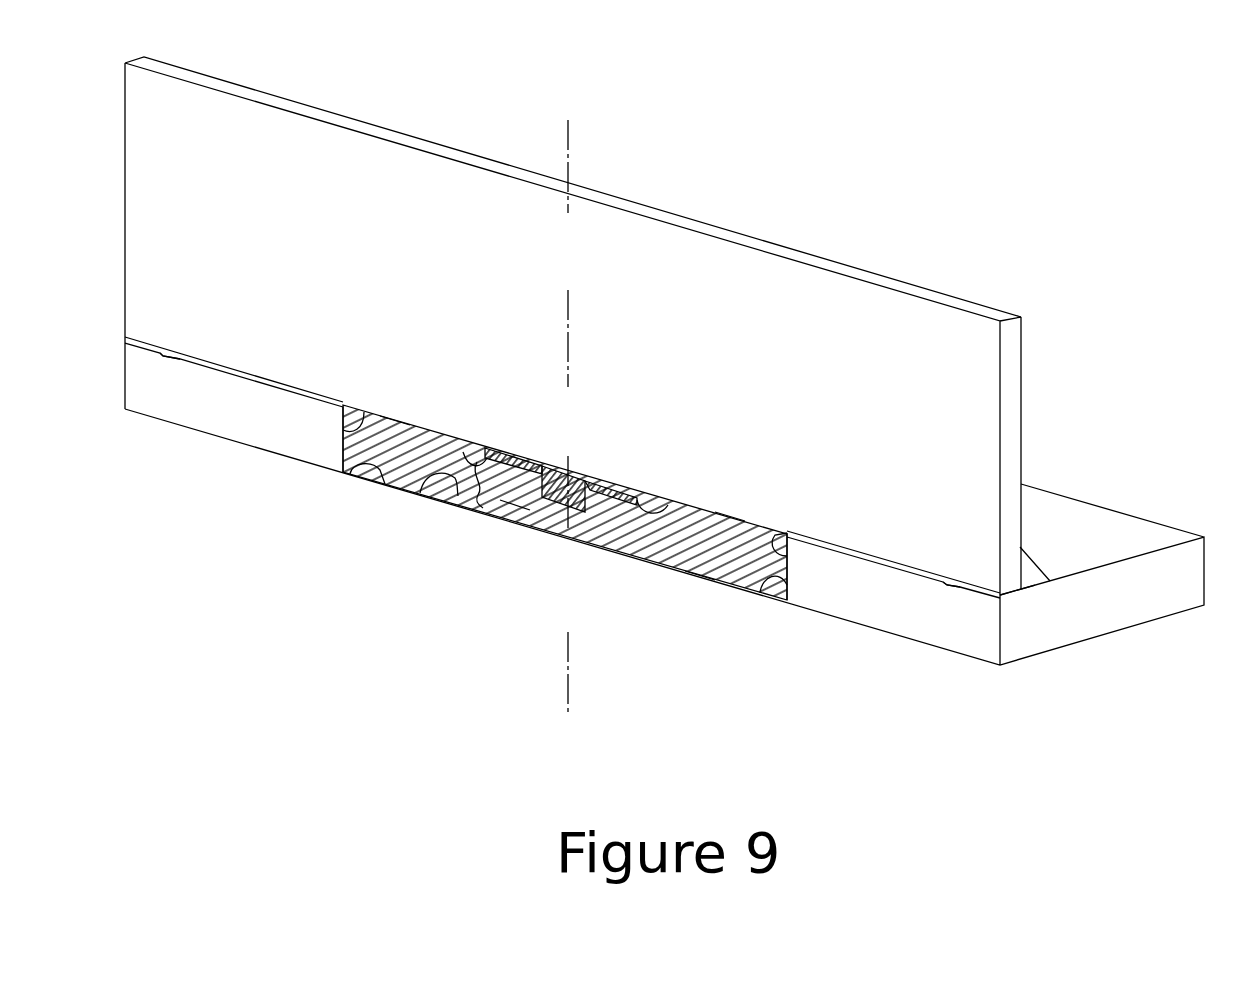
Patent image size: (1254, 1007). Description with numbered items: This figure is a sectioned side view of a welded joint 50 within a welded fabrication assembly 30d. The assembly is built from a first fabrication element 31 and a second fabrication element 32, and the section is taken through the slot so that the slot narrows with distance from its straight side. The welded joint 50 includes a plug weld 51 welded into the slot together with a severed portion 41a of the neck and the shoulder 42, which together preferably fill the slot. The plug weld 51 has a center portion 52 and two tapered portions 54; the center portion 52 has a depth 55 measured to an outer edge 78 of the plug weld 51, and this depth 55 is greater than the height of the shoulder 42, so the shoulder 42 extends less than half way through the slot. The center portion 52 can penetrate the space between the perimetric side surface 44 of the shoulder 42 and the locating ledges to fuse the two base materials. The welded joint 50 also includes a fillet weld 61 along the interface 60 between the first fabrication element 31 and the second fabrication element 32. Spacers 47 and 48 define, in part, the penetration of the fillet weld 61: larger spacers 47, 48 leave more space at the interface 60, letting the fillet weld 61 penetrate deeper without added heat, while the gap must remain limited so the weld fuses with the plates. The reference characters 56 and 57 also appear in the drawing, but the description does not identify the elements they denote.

The welded fabrication assembly 30d is at (1070, 336).
The first fabrication element 31 is at (1090, 640).
The second fabrication element 32 is at (805, 252).
The severed portion of the neck 41a is at (483, 510).
The shoulder 42 is at (597, 483).
The perimetric side surface 44 is at (465, 455).
The spacers 47 is at (395, 421).
The spacers 48 is at (163, 356).
The welded joint 50 is at (640, 582).
The plug weld 51 is at (553, 522).
The center portion 52 is at (518, 505).
The tapered portions 54 is at (348, 473).
The depth 55 is at (420, 494).
The bore 56 is at (367, 410).
The center line 57 is at (567, 330).
The interface 60 is at (1037, 590).
The fillet weld 61 is at (1037, 582).
The outer edge 78 is at (700, 578).